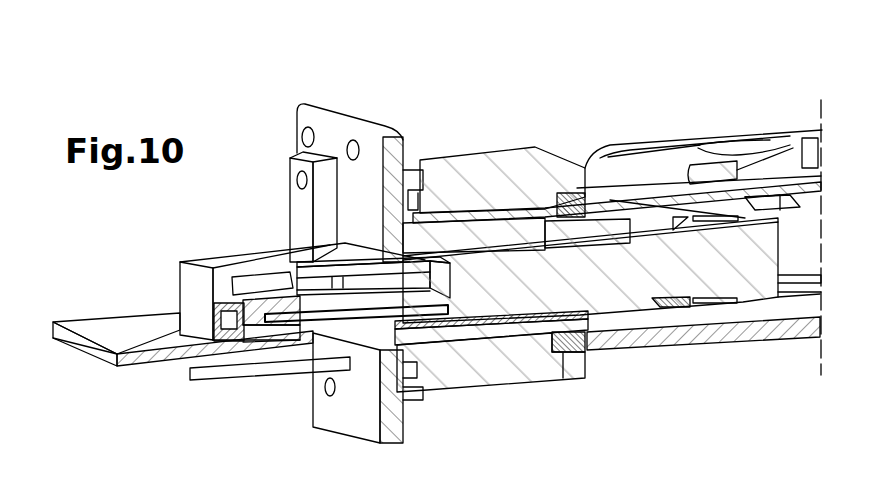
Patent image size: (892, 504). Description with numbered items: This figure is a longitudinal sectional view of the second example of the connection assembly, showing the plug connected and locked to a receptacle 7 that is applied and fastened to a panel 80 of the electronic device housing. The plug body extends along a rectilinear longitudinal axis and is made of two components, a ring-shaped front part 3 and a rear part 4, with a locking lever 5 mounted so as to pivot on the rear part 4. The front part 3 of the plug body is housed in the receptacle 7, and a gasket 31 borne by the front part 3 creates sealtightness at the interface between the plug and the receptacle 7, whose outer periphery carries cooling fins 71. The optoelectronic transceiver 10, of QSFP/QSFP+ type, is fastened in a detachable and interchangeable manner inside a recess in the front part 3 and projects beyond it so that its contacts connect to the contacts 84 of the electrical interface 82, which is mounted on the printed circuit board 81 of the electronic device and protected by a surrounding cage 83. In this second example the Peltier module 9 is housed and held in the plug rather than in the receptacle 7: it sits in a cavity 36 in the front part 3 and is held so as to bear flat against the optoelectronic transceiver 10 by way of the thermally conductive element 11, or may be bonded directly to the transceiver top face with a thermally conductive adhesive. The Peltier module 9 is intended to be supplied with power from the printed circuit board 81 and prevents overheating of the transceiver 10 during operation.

The front part 3 is at (293, 233).
The rear part 4 is at (747, 187).
The locking lever 5 is at (680, 150).
The receptacle 7 is at (417, 175).
The Peltier module 9 is at (487, 240).
The optoelectronic transceiver 10 is at (293, 363).
The thermally conductive element 11 is at (523, 217).
The gasket 31 is at (568, 356).
The cavity 36 is at (410, 255).
The cooling fins 71 is at (495, 357).
The panel 80 is at (293, 117).
The printed circuit board 81 is at (83, 347).
The electrical interface 82 is at (233, 337).
The cage 83 is at (187, 280).
The contacts 84 is at (277, 330).